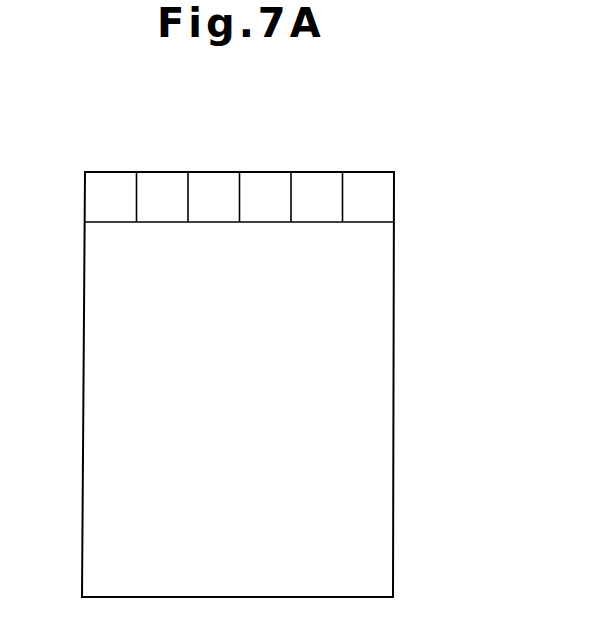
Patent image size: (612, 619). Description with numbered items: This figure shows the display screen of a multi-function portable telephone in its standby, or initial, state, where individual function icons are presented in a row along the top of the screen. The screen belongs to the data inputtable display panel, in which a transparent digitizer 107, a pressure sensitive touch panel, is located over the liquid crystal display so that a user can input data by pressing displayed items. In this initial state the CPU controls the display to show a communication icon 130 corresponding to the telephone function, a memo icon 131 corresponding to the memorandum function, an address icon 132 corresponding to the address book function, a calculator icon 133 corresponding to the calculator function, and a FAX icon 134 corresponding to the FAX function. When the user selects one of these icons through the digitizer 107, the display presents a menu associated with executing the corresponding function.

The digitizer 107 is at (382, 471).
The communication icon 130 is at (103, 182).
The memo icon 131 is at (156, 182).
The address icon 132 is at (207, 182).
The calculator icon 133 is at (263, 185).
The FAX icon 134 is at (315, 182).